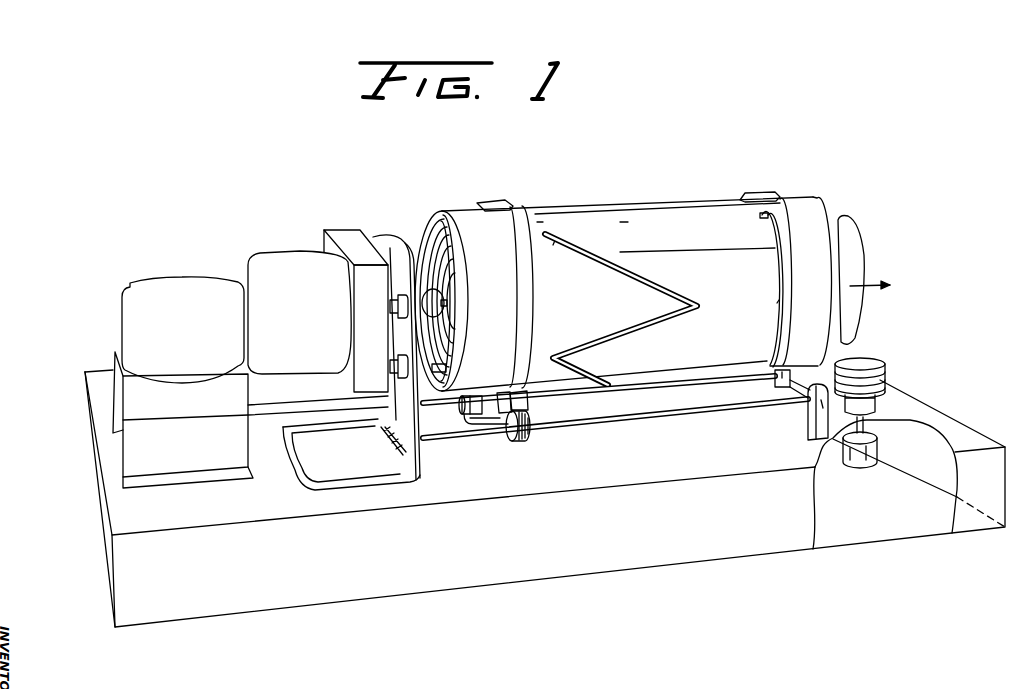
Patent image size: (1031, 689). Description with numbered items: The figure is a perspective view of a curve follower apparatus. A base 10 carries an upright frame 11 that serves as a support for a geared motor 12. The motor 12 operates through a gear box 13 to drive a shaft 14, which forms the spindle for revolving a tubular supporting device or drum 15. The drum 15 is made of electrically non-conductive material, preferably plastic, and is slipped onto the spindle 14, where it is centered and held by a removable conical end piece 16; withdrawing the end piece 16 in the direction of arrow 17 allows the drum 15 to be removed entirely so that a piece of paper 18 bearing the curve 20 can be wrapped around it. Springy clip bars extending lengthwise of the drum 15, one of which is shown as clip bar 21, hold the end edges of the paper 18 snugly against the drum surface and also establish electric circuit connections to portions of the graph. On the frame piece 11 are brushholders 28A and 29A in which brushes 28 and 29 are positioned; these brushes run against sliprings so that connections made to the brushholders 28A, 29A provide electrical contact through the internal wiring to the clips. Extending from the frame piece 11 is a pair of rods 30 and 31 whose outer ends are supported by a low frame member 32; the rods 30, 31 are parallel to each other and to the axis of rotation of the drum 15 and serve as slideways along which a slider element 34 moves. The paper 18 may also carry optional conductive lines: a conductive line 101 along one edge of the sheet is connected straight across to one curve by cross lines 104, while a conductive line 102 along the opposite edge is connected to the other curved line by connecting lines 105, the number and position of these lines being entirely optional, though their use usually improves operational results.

The base 10 is at (897, 403).
The upright frame 11 is at (393, 482).
The geared motor 12 is at (277, 252).
The gear box 13 is at (333, 229).
The shaft 14 is at (406, 237).
The drum 15 is at (463, 214).
The removable conical end piece 16 is at (849, 247).
The arrow 17 is at (870, 278).
The piece of paper 18 is at (510, 273).
The curve 20 is at (587, 241).
The clip bar 21 is at (512, 202).
The brush 28 is at (448, 368).
The brushholder 28A is at (399, 372).
The brush 29 is at (447, 303).
The brushholder 29A is at (402, 293).
The rod 30 is at (567, 403).
The rod 31 is at (610, 424).
The low frame member 32 is at (788, 412).
The slider element 34 is at (512, 443).
The conductive line 101 is at (777, 303).
The conductive line 102 is at (531, 292).
The cross line 104 is at (706, 251).
The connecting line 105 is at (553, 245).